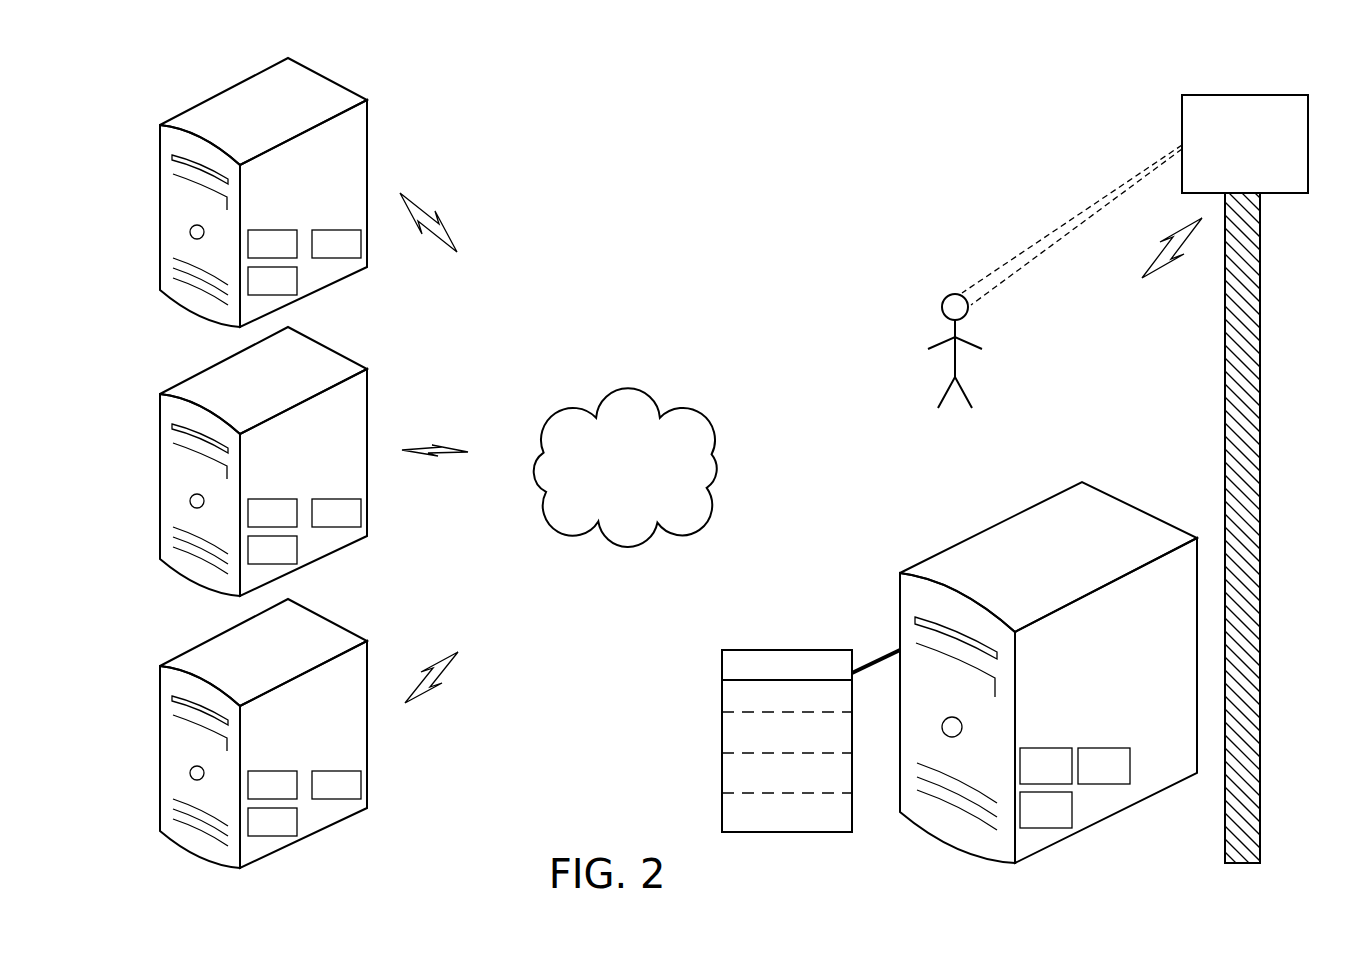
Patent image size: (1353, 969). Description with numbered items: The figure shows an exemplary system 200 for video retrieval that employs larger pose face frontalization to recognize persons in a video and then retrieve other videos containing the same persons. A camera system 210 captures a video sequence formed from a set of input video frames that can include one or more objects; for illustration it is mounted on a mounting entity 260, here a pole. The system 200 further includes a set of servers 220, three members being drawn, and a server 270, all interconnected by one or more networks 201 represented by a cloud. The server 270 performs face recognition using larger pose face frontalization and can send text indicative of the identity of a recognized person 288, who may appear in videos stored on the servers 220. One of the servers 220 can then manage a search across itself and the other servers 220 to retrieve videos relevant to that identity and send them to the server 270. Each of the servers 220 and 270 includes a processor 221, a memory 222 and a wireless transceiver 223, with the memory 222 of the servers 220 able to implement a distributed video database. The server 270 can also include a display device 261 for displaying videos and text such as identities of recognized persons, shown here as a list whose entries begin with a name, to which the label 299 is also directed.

The system for video retrieval 200 is at (1236, 48).
The networks 201 is at (609, 479).
The camera system 210 is at (1227, 186).
The set of servers 220 is at (248, 124).
The processor 221 is at (256, 254).
The memory 222 is at (320, 254).
The wireless transceiver 223 is at (256, 291).
The mounting entity 260 is at (1220, 394).
The display device 261 is at (781, 638).
The server 270 is at (1012, 588).
The recognized person 288 is at (955, 280).
The list entry 299 is at (713, 650).